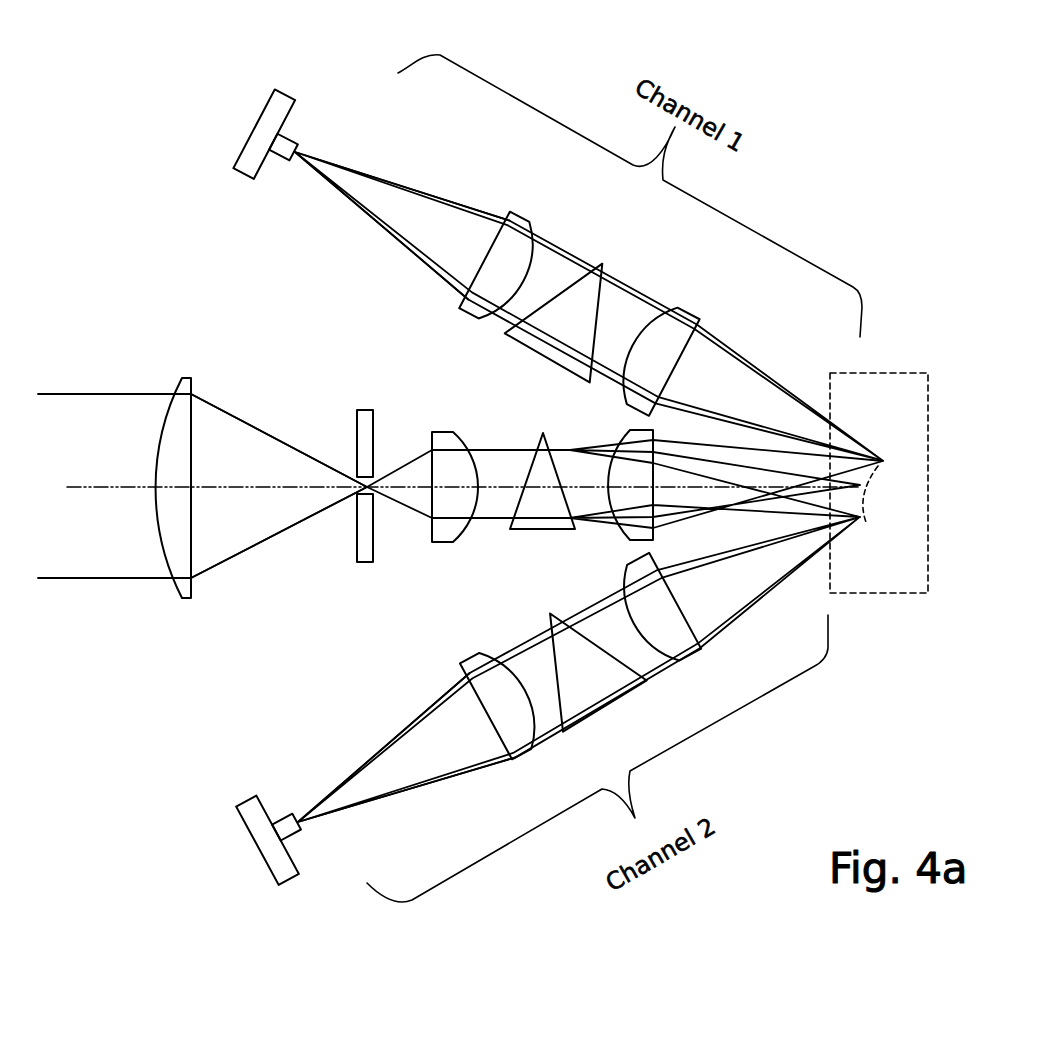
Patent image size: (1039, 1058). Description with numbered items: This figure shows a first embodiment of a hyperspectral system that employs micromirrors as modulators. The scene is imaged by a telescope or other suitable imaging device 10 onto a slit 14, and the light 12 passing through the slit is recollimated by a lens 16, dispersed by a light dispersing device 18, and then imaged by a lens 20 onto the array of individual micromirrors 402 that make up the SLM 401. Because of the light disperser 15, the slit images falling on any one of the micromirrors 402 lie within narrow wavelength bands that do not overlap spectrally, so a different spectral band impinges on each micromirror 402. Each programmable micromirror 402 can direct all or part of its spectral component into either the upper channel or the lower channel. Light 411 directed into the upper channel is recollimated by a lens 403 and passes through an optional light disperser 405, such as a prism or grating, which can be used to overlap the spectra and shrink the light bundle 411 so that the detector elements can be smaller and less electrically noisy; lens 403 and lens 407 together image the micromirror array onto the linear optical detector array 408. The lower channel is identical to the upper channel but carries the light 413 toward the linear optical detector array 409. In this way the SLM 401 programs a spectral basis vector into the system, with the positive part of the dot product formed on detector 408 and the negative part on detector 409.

The imaging device 10 is at (185, 380).
The light 12 is at (242, 403).
The slit 14 is at (362, 547).
The light disperser 15 is at (572, 392).
The lens 16 is at (450, 432).
The light dispersing device 18 is at (536, 432).
The lens 20 is at (622, 432).
The SLM 401 is at (879, 483).
The micromirrors 402 is at (875, 490).
The lens 403 is at (700, 318).
The light disperser 405 is at (590, 270).
The lens 407 is at (522, 217).
The linear optical detector array 408 is at (281, 160).
The linear optical detector array 409 is at (292, 817).
The light 411 is at (368, 244).
The channel 2 beam 413 is at (371, 733).